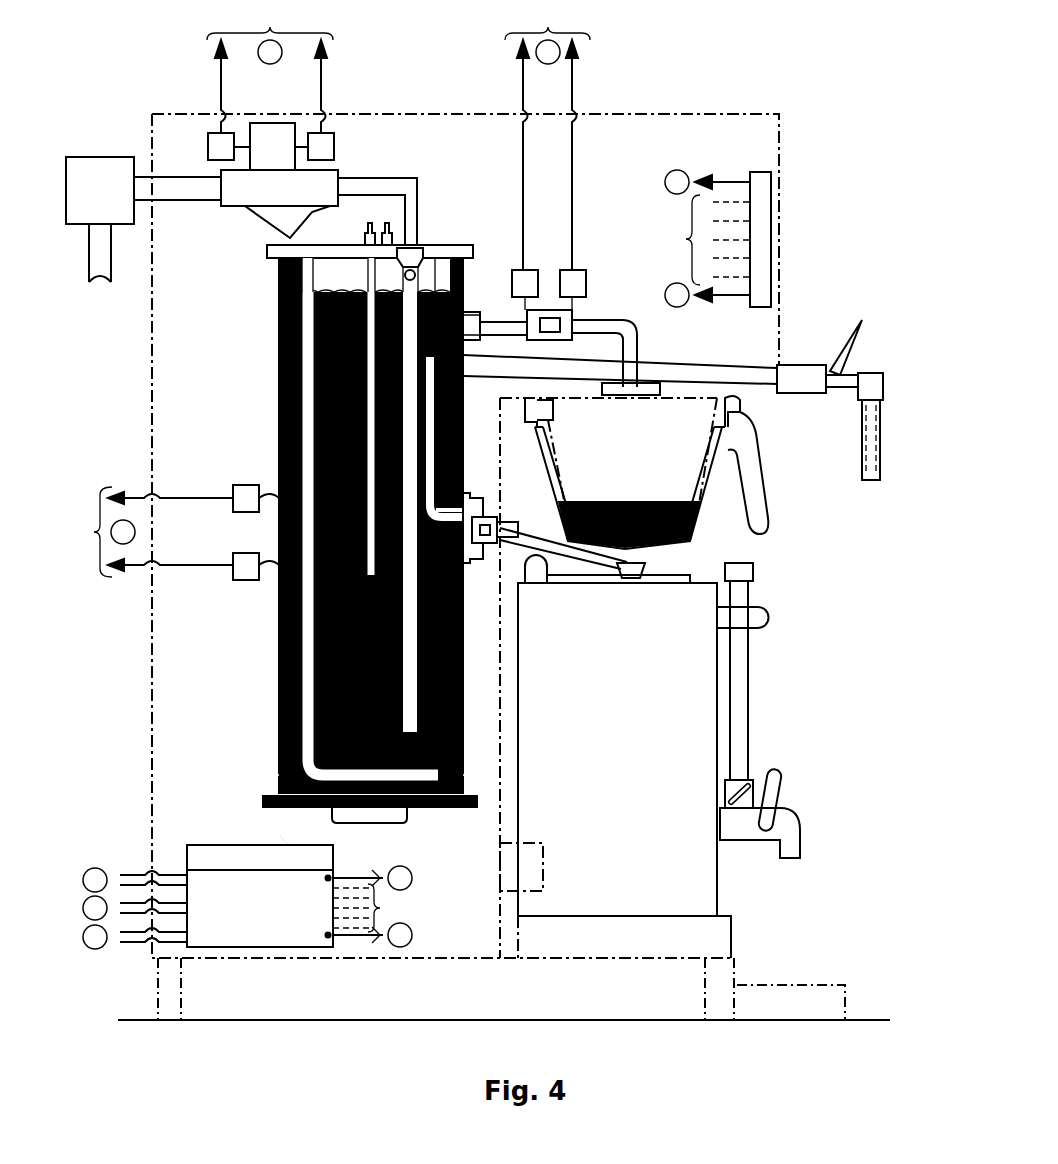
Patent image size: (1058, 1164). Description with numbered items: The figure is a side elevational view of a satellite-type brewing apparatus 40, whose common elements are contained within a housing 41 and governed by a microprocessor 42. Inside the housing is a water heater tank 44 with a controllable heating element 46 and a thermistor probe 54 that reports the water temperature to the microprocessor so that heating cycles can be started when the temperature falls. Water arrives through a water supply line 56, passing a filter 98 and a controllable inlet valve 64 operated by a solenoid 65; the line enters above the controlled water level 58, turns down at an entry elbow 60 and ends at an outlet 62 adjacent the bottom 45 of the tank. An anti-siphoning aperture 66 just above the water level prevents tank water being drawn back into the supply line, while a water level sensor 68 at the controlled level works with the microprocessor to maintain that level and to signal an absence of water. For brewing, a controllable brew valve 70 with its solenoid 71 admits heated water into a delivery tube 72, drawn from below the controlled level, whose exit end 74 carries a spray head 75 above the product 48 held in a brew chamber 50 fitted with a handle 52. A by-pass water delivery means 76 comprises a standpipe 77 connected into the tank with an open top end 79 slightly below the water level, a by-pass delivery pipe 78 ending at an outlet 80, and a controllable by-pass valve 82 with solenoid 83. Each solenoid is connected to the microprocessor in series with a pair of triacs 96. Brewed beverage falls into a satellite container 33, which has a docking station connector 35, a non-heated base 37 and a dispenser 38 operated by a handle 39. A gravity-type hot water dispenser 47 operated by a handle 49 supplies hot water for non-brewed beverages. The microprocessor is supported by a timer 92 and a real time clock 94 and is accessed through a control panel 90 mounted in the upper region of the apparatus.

The satellite container 33 is at (705, 710).
The docking station connector 35 is at (535, 843).
The base 37 is at (733, 930).
The dispenser 38 is at (800, 832).
The handle 39 is at (778, 788).
The brewing apparatus 40 is at (828, 92).
The housing 41 is at (680, 114).
The microprocessor 42 is at (296, 935).
The water heater tank 44 is at (282, 384).
The bottom 45 is at (408, 818).
The controllable heating element 46 is at (308, 418).
The gravity-type hot water dispenser 47 is at (880, 418).
The product 48 is at (648, 502).
The handle 49 is at (860, 325).
The brew chamber 50 is at (712, 422).
The handle 52 is at (758, 485).
The probe 54 is at (310, 318).
The water supply line 56 is at (180, 200).
The controlled water level 58 is at (318, 286).
The entry elbow 60 is at (420, 186).
The outlet 62 is at (380, 756).
The controllable inlet valve 64 is at (250, 206).
The solenoid 65 is at (272, 128).
The anti-siphoning aperture 66 is at (388, 416).
The water level sensor 68 is at (428, 285).
The controllable brew valve 70 is at (555, 340).
The solenoid 71 is at (550, 318).
The delivery tube 72 is at (600, 320).
The exit end 74 is at (645, 383).
The spray head 75 is at (655, 380).
The by-pass water delivery means 76 is at (508, 560).
The standpipe 77 is at (440, 431).
The by-pass delivery pipe 78 is at (530, 540).
The open top end 79 is at (450, 320).
The outlet 80 is at (605, 565).
The controllable by-pass water delivery valve 82 is at (487, 545).
The solenoid 83 is at (483, 525).
The control panel 90 is at (772, 226).
The timer 92 is at (287, 845).
The real time clock 94 is at (206, 845).
The triacs 96 is at (208, 148).
The filter 98 is at (99, 160).